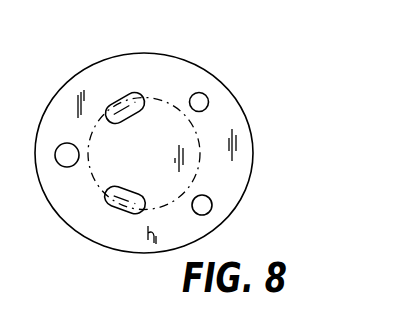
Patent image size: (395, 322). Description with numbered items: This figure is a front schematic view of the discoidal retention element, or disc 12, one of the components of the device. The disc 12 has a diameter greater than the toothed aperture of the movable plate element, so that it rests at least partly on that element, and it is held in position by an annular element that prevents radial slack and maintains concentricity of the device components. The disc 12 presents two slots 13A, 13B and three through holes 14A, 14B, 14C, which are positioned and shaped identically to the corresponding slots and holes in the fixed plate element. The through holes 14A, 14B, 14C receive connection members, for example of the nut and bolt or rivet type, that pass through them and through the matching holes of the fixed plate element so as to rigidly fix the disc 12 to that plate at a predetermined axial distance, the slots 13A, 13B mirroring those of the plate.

The disc 12 is at (85, 235).
The slot 13A is at (117, 95).
The slot 13B is at (122, 211).
The through hole 14A is at (58, 165).
The through hole 14B is at (207, 96).
The through hole 14C is at (212, 203).